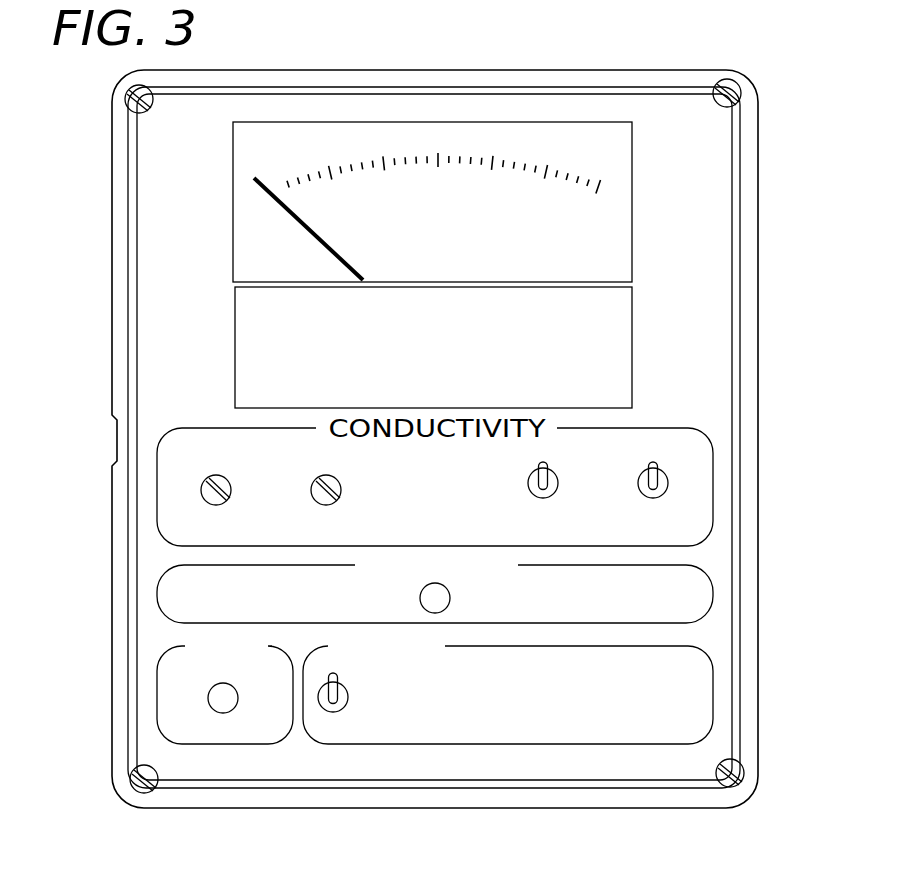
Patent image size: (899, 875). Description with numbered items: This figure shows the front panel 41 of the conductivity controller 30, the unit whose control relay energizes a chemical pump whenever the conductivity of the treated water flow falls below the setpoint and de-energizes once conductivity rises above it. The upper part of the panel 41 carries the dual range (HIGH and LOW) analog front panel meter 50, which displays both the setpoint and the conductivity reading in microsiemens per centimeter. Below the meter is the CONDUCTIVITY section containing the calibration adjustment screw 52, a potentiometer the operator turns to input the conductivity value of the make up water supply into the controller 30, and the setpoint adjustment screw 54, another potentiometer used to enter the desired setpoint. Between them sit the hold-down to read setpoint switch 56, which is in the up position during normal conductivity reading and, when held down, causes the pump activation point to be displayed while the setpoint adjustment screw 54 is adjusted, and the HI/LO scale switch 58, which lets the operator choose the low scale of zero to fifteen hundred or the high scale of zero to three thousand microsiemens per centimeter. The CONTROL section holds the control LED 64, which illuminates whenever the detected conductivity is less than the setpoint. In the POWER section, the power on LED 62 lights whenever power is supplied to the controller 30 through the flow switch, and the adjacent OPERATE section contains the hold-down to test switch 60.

The conductivity controller 30 is at (382, 452).
The front panel 41 is at (137, 251).
The analog front panel meter 50 is at (615, 240).
The calibration adjustment screw 52 is at (201, 492).
The setpoint adjustment screw 54 is at (312, 488).
The hold-down to read setpoint switch 56 is at (528, 488).
The HI/LO scale switch 58 is at (668, 483).
The hold-down to test switch 60 is at (330, 710).
The power on LED 62 is at (277, 727).
The control LED 64 is at (450, 597).